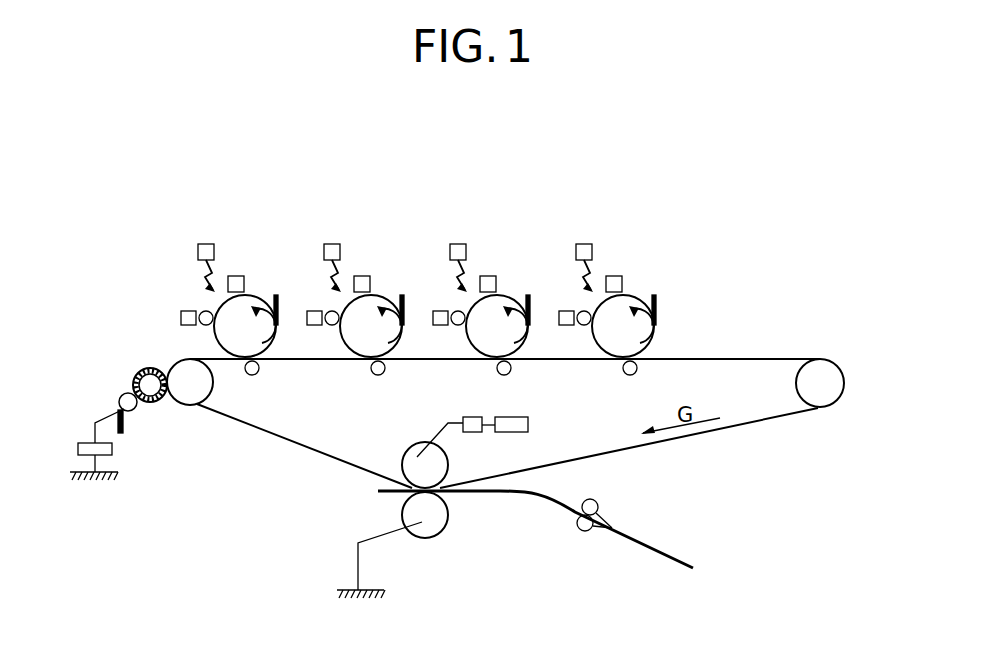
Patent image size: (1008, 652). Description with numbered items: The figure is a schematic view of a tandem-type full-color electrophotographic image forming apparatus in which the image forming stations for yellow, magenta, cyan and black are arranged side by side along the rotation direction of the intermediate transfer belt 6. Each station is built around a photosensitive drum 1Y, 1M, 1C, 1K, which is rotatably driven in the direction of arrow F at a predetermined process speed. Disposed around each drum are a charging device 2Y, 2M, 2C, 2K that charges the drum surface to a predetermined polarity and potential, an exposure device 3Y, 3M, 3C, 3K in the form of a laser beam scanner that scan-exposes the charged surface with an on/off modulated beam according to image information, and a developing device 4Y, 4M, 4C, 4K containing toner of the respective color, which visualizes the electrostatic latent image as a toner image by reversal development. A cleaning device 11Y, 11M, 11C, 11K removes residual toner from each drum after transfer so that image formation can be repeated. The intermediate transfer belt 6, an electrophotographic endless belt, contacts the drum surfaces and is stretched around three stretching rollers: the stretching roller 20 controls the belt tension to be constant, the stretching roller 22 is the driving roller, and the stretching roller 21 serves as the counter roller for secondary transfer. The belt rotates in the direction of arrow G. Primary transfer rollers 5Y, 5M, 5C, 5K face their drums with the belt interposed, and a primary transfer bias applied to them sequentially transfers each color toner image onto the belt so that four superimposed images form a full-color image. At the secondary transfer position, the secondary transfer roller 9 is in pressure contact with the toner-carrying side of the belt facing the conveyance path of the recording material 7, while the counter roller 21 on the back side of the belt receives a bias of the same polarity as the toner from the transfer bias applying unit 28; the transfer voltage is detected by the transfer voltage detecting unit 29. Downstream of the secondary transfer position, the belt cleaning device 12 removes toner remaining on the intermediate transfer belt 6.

The photosensitive drum 1Y is at (245, 326).
The photosensitive drum 1M is at (371, 326).
The photosensitive drum 1C is at (497, 326).
The photosensitive drum 1K is at (623, 326).
The charging device 2Y is at (236, 276).
The charging device 2M is at (362, 276).
The charging device 2C is at (488, 276).
The charging device 2K is at (614, 276).
The exposure device 3Y is at (206, 244).
The exposure device 3M is at (332, 244).
The exposure device 3C is at (458, 244).
The exposure device 3K is at (584, 244).
The developing device 4Y is at (189, 311).
The developing device 4M is at (315, 311).
The developing device 4C is at (441, 311).
The developing device 4K is at (567, 311).
The primary transfer roller 5Y is at (258, 373).
The primary transfer roller 5M is at (373, 373).
The primary transfer roller 5C is at (499, 373).
The primary transfer roller 5K is at (625, 373).
The cleaning device 11Y is at (276, 295).
The cleaning device 11M is at (402, 295).
The cleaning device 11C is at (528, 295).
The cleaning device 11K is at (654, 295).
The intermediate transfer belt 6 is at (773, 417).
The recording material 7 is at (543, 502).
The secondary transfer roller 9 is at (403, 516).
The cleaning device 12 is at (127, 349).
The stretching roller 20 is at (832, 362).
The stretching roller 21 is at (405, 450).
The stretching roller 22 is at (180, 361).
The transfer bias applying unit 28 is at (514, 416).
The transfer voltage detecting unit 29 is at (458, 416).